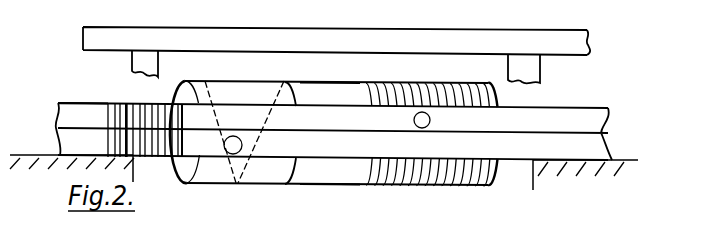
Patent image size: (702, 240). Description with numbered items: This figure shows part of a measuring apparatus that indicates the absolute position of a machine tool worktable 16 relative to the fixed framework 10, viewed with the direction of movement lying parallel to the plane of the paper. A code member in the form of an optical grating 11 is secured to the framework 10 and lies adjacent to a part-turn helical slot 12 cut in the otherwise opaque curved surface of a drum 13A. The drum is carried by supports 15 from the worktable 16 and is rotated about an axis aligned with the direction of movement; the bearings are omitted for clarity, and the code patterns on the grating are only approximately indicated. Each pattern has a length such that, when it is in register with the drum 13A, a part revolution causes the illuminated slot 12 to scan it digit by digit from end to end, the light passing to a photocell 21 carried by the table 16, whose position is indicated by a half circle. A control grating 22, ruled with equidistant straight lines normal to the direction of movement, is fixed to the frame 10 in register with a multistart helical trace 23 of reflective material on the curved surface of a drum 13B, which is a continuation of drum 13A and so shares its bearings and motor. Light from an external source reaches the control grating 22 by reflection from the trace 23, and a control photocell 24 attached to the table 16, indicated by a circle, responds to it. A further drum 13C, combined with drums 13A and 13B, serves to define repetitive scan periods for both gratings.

The framework 10 is at (48, 155).
The optical grating 11 is at (154, 150).
The part-turn helical slot 12 is at (224, 157).
The drum 13A is at (260, 208).
The drum 13B is at (470, 212).
The drum 13C is at (345, 208).
The supports 15 is at (137, 68).
The worktable 16 is at (497, 48).
The photocell 21 is at (233, 136).
The control grating 22 is at (73, 113).
The multistart helical trace 23 is at (419, 172).
The control photocell 24 is at (430, 120).